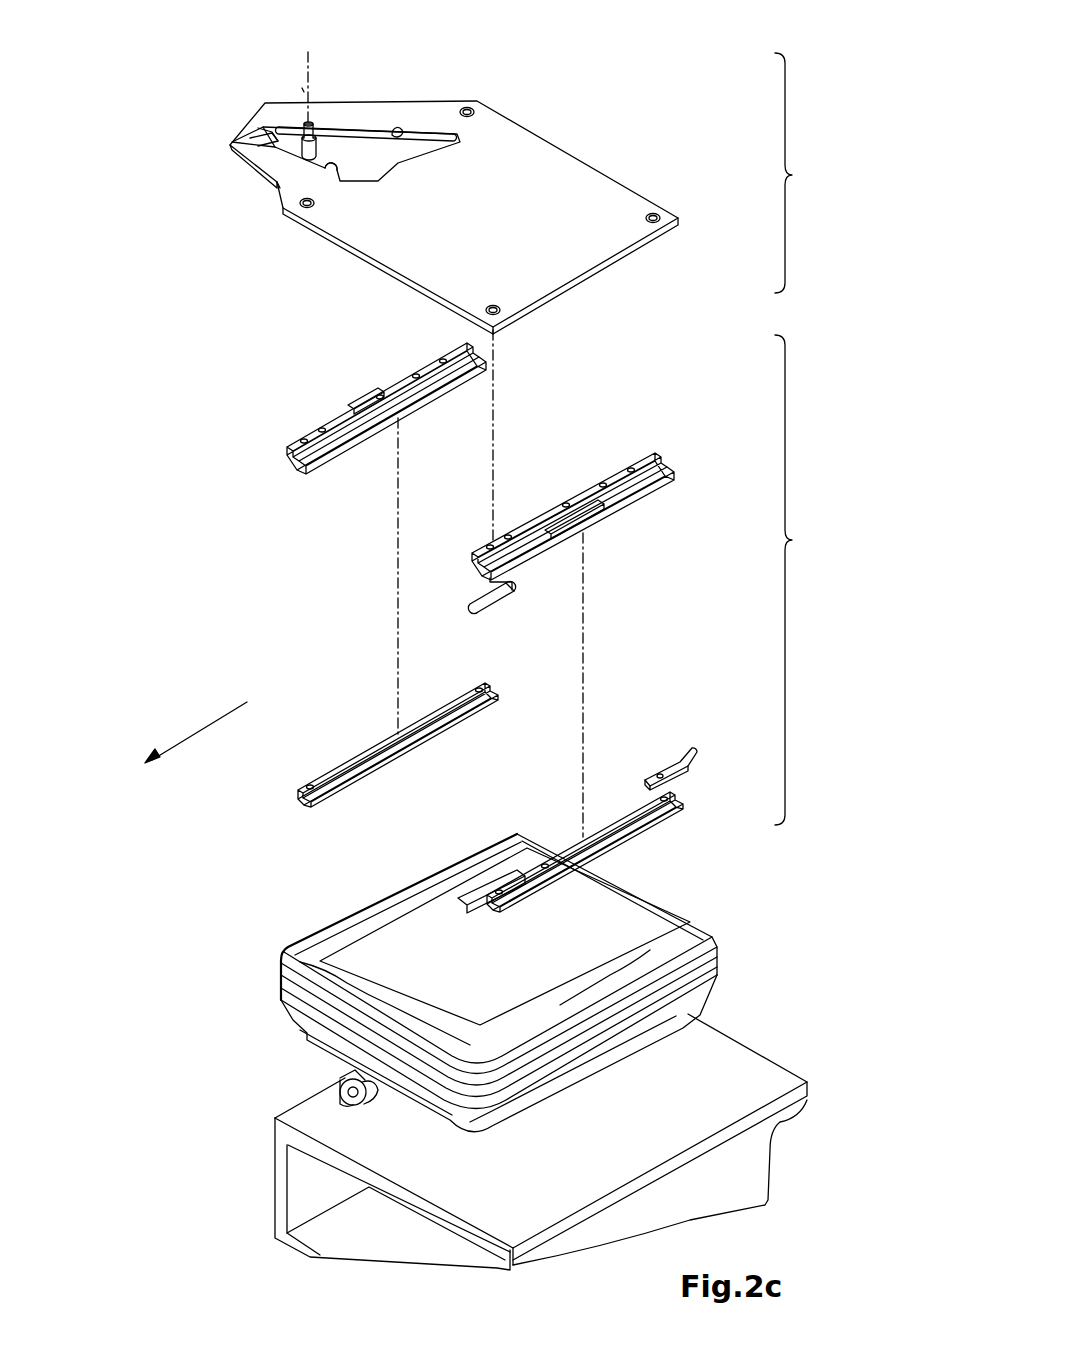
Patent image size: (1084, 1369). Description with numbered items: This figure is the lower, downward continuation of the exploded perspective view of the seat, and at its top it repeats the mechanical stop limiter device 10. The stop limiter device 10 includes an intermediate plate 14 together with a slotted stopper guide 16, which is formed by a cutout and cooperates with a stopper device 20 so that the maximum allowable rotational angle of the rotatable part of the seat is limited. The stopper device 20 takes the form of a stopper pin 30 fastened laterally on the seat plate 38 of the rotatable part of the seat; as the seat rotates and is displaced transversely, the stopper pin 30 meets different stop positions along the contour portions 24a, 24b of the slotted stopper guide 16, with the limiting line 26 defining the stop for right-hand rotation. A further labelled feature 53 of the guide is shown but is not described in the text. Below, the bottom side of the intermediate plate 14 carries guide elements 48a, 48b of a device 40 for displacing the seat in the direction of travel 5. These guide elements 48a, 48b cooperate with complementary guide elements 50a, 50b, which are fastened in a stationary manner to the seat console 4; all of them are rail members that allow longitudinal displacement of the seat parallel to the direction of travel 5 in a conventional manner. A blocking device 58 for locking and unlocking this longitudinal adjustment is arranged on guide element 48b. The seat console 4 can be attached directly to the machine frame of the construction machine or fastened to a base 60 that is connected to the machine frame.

The seat console 4 is at (617, 927).
The direction of travel 5 is at (213, 718).
The mechanical stop limiter device 10 is at (805, 173).
The intermediate plate 14 is at (508, 216).
The slotted stopper guide 16 is at (298, 76).
The stopper device 20 is at (246, 143).
The first hole 24a is at (277, 153).
The second hole 24b is at (337, 163).
The limiting line 26 is at (399, 125).
The stopper pin 30 is at (272, 132).
The seat plate 38 is at (308, 52).
The device for displacing the seat in the direction of travel 40 is at (804, 580).
The guide element 48a is at (335, 413).
The guide element 48b is at (610, 475).
The complementary guide element 50a is at (370, 752).
The complementary guide element 50b is at (613, 833).
The guide slot 53 is at (382, 170).
The blocking device 58 is at (503, 600).
The base 60 is at (713, 1078).